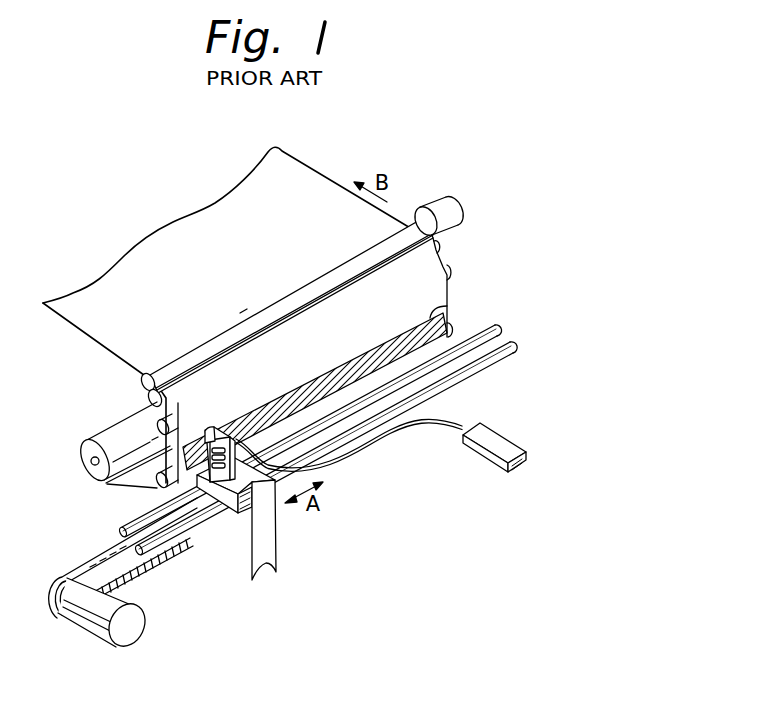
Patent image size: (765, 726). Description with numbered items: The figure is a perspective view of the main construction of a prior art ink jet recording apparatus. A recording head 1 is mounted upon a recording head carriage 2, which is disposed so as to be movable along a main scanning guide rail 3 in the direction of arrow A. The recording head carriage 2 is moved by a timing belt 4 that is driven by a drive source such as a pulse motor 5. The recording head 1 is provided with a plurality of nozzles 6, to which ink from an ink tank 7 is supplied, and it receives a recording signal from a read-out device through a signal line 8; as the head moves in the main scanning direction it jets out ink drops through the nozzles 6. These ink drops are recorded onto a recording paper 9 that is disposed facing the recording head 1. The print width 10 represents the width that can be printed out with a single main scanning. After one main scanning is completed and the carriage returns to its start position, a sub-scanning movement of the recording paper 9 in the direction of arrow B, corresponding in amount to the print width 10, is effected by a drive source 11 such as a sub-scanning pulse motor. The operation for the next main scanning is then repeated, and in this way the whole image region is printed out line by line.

The recording head 1 is at (237, 424).
The recording head carriage 2 is at (232, 512).
The main scanning guide rail 3 is at (513, 337).
The timing belt 4 is at (103, 557).
The pulse motor 5 is at (95, 613).
The nozzles 6 is at (215, 427).
The ink tank 7 is at (490, 458).
The signal line 8 is at (276, 572).
The recording paper 9 is at (82, 456).
The print width 10 is at (436, 310).
The drive source 11 is at (446, 208).